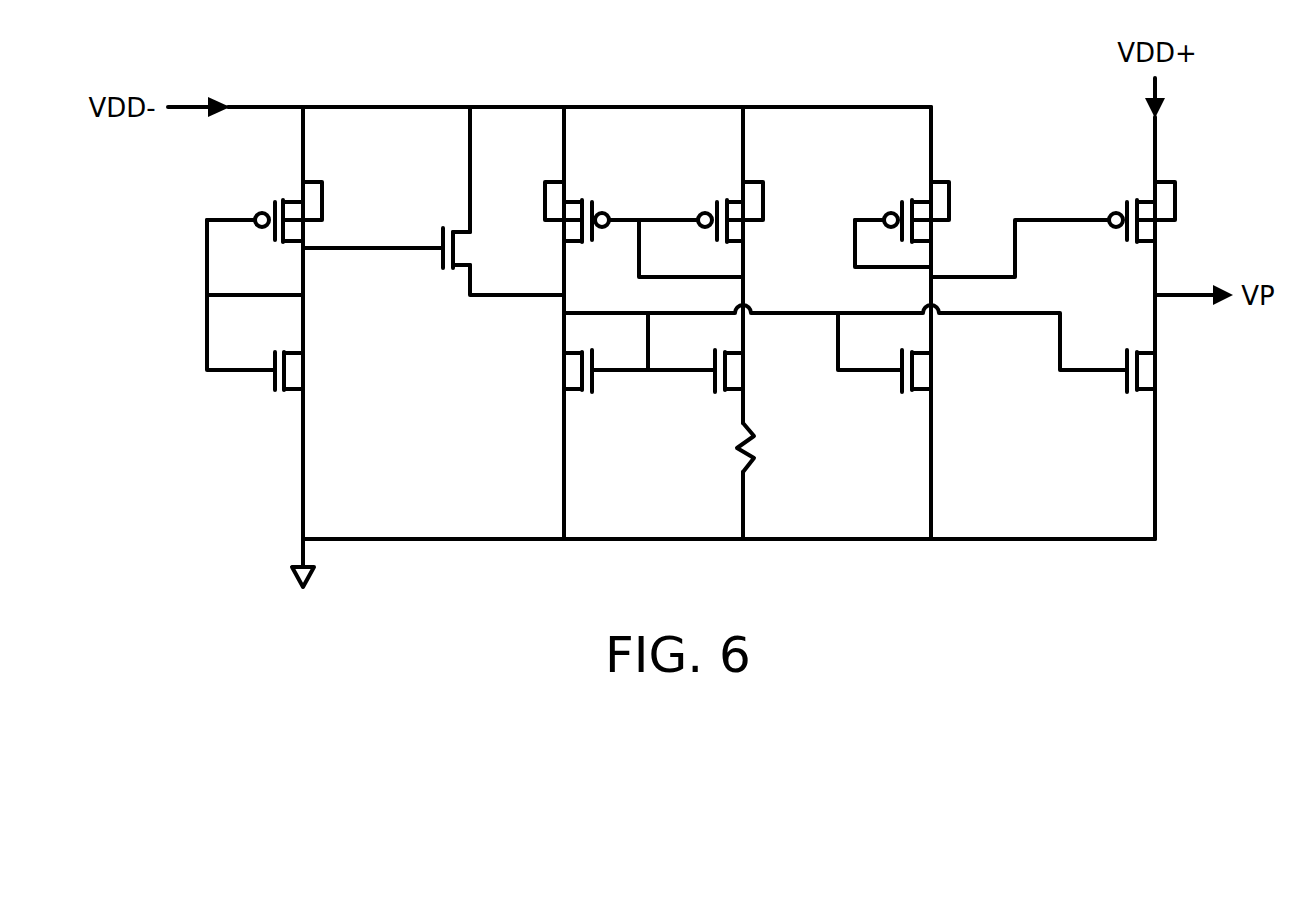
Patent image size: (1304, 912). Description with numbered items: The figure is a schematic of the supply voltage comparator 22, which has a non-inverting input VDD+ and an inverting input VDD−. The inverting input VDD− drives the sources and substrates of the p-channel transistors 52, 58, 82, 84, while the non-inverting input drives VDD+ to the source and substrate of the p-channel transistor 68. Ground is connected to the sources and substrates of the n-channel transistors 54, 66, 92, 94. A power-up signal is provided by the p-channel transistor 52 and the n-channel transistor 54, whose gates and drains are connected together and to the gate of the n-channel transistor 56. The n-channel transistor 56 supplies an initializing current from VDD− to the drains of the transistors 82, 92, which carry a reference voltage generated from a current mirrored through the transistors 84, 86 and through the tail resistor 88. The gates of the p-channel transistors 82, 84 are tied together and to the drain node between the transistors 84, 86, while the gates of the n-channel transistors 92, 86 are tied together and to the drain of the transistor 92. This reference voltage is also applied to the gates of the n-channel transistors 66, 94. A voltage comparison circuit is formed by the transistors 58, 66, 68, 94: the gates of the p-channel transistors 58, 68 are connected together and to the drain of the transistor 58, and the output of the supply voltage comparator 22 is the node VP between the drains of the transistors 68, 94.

The supply voltage comparator 22 is at (422, 655).
The p-channel transistor 52 is at (296, 197).
The n-channel transistor 54 is at (289, 393).
The n-channel transistor 56 is at (457, 268).
The p-channel transistor 58 is at (921, 197).
The n-channel transistor 66 is at (919, 395).
The p-channel transistor 68 is at (1147, 197).
The p-channel transistor 82 is at (571, 197).
The p-channel transistor 84 is at (734, 197).
The n-channel transistor 86 is at (729, 395).
The tail resistor 88 is at (735, 468).
The n-channel transistor 92 is at (572, 396).
The n-channel transistor 94 is at (1142, 395).